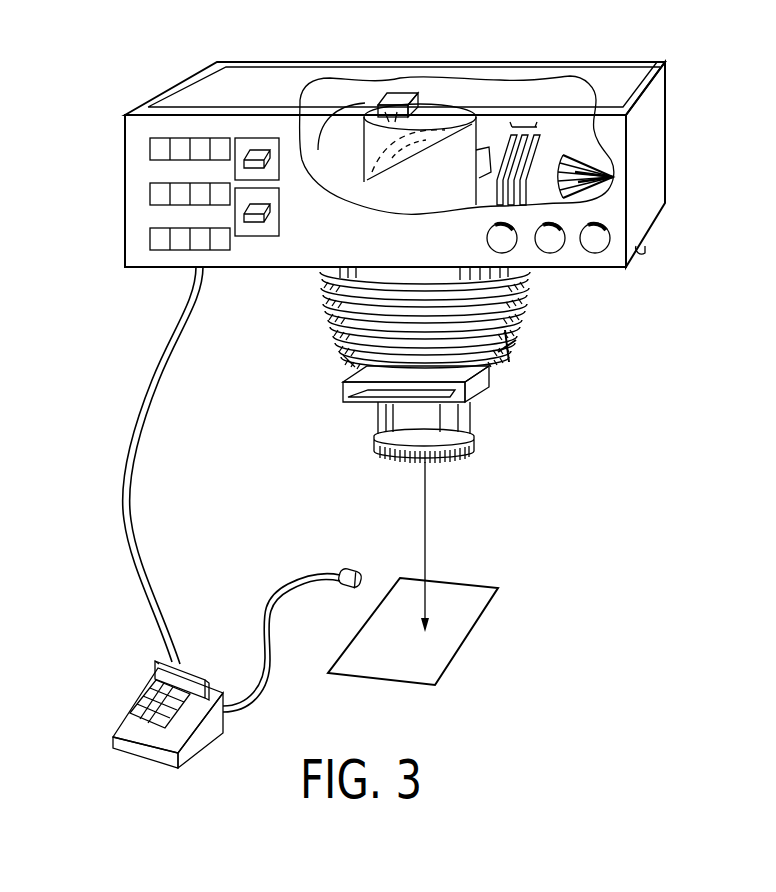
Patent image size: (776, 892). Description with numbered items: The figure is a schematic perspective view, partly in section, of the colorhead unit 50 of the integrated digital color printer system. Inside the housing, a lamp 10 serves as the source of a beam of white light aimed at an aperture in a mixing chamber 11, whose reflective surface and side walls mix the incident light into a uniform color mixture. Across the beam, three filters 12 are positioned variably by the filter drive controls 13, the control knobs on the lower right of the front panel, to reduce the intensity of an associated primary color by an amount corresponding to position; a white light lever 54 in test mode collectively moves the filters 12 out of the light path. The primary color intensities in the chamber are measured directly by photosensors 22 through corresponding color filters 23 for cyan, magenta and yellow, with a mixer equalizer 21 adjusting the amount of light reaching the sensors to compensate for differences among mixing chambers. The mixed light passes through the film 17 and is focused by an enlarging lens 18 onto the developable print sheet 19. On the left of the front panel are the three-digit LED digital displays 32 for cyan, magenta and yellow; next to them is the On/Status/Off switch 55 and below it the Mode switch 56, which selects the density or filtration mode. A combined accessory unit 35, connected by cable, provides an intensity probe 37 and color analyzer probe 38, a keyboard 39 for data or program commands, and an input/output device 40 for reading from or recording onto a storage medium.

The lamp 10 is at (590, 165).
The mixing chamber 11 is at (483, 118).
The filters 12 is at (531, 124).
The filter drive controls 13 is at (508, 246).
The film 17 is at (345, 395).
The enlarging lens 18 is at (478, 452).
The sheet 19 is at (463, 628).
The mixer equalizer 21 is at (395, 115).
The photosensors 22 is at (333, 93).
The color filters 23 is at (380, 94).
The digital display 32 is at (138, 134).
The accessory unit 35 is at (192, 716).
The intensity probe 37 is at (366, 552).
The color analyzer probe 38 is at (346, 572).
The keyboard 39 is at (196, 732).
The input/output device 40 is at (186, 672).
The colorhead unit 50 is at (668, 95).
The white light lever 54 is at (648, 244).
The On/Status/Off switch 55 is at (262, 166).
The Mode switch 56 is at (262, 218).